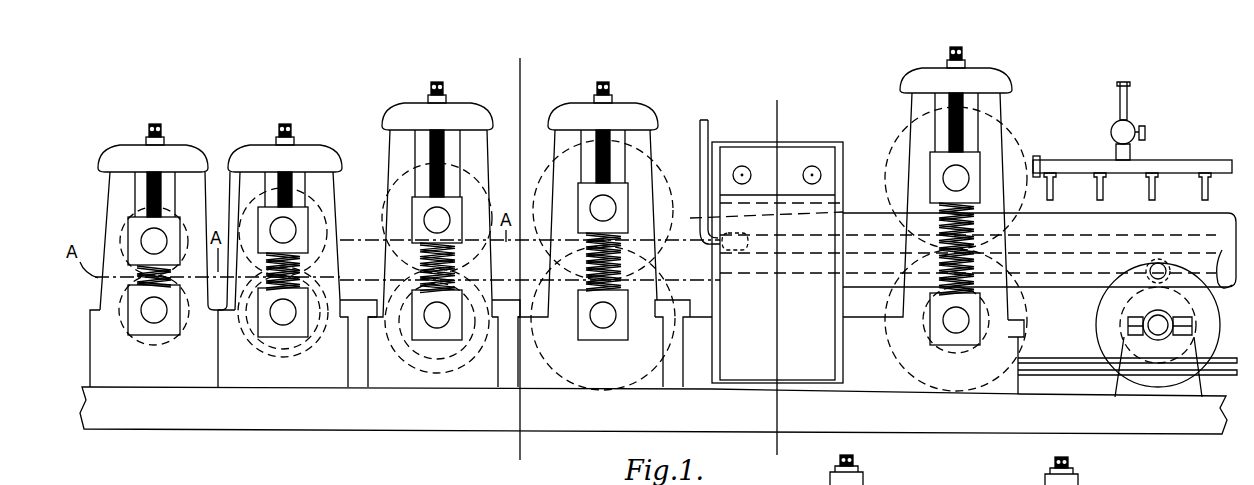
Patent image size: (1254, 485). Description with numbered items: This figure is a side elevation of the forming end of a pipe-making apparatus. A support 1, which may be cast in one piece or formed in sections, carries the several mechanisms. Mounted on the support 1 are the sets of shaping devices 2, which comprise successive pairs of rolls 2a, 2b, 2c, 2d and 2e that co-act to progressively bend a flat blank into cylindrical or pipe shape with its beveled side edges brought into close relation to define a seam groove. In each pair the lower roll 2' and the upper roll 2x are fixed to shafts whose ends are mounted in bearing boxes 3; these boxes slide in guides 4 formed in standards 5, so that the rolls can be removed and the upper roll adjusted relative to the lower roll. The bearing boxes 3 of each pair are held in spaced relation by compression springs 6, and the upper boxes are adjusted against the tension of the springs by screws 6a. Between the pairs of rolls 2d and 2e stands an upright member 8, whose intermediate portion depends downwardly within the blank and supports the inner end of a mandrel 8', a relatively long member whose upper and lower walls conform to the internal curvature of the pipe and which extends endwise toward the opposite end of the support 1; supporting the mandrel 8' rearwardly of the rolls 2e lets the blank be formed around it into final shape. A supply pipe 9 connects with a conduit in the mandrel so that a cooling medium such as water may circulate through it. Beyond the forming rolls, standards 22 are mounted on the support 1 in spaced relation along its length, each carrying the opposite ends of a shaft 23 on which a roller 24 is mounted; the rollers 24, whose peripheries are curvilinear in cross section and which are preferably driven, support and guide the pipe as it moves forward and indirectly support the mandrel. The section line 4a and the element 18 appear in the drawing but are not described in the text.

The support 1 is at (329, 422).
The sets of shaping devices 2 is at (573, 241).
The pair of rolls 2a is at (160, 255).
The pair of rolls 2b is at (297, 255).
The pair of rolls 2c is at (444, 234).
The pair of rolls 2d is at (615, 234).
The pair of rolls 2e is at (933, 220).
The upper roll 2x is at (190, 224).
The lower roll 2' is at (717, 328).
The bearing boxes 3 is at (128, 234).
The guides 4 is at (180, 191).
The section line 4a- 4a is at (775, 280).
The standards 5 is at (562, 134).
The compression springs 6 is at (135, 276).
The screws 6a is at (290, 167).
The upright member 8 is at (953, 272).
The mandrel 8' is at (1226, 240).
The supply pipe 9 is at (708, 128).
The cooling manifold 18 is at (1132, 141).
The standards 22 is at (1193, 390).
The shaft 23 is at (1168, 323).
The roller 24 is at (1097, 343).